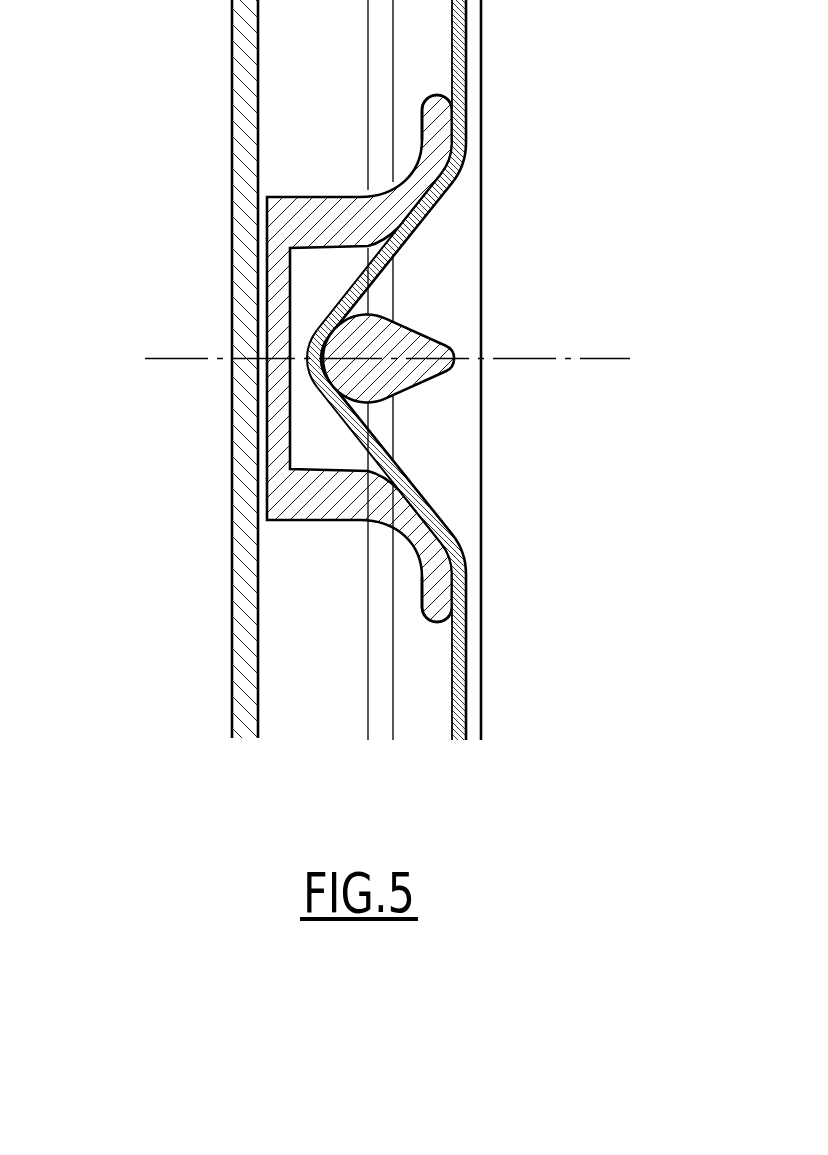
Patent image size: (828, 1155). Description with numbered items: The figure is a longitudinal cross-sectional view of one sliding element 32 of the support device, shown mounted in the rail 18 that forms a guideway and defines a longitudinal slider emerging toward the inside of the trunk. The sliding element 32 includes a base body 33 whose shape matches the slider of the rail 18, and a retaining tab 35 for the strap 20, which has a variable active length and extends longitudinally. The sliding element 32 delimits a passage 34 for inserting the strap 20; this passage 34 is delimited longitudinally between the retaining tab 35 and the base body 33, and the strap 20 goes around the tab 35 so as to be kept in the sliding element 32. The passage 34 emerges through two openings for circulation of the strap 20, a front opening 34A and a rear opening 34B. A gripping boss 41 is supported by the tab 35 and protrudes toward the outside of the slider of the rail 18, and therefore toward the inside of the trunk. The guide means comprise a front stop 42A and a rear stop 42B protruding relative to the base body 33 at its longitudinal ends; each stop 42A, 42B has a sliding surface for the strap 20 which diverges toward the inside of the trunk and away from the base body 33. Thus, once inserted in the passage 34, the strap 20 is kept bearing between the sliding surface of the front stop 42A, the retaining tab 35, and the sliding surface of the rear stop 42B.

The rail 18 is at (242, 60).
The strap 20 is at (456, 370).
The sliding element 32 is at (369, 359).
The base body 33 is at (310, 212).
The passage 34 is at (456, 358).
The front opening 34A is at (403, 287).
The rear opening 34B is at (397, 430).
The retaining tab 35 is at (383, 358).
The gripping boss 41 is at (432, 348).
The front stop 42A is at (430, 167).
The rear stop 42B is at (437, 603).